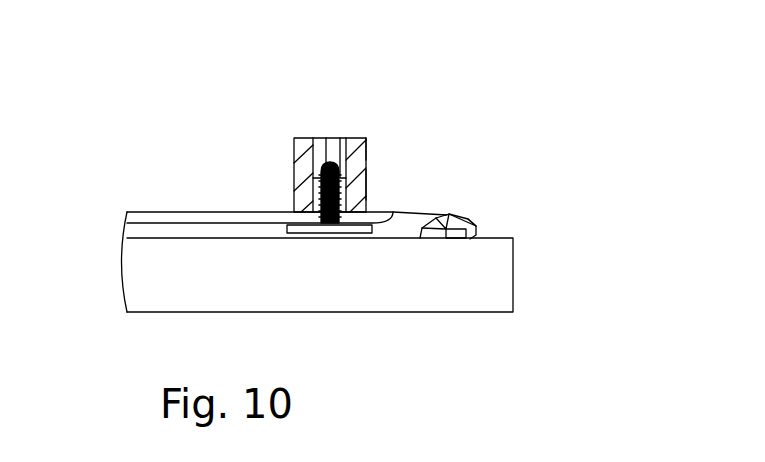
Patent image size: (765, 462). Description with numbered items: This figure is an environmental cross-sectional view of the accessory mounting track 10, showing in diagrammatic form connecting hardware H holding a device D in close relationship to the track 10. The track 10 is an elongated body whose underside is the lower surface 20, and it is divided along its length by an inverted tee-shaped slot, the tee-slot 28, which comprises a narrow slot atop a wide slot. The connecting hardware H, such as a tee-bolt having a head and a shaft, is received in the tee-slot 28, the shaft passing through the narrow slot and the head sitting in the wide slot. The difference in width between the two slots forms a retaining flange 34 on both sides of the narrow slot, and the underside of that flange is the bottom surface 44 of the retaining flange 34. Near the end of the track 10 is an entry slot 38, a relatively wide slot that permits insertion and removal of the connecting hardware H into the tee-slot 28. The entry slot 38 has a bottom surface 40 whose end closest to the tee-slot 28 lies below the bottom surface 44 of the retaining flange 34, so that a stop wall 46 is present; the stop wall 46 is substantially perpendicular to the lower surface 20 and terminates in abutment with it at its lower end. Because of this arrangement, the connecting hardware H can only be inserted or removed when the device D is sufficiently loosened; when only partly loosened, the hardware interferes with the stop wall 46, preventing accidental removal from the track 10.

The track 10 is at (500, 42).
The lower surface 20 is at (441, 238).
The tee-slot 28 is at (290, 211).
The retaining flange 34 is at (273, 218).
The entry slot 38 is at (427, 198).
The bottom surface 40 is at (442, 215).
The bottom surface of the retaining flange 44 is at (286, 225).
The stop wall 46 is at (443, 226).
The device D is at (363, 125).
The connecting hardware H is at (362, 183).